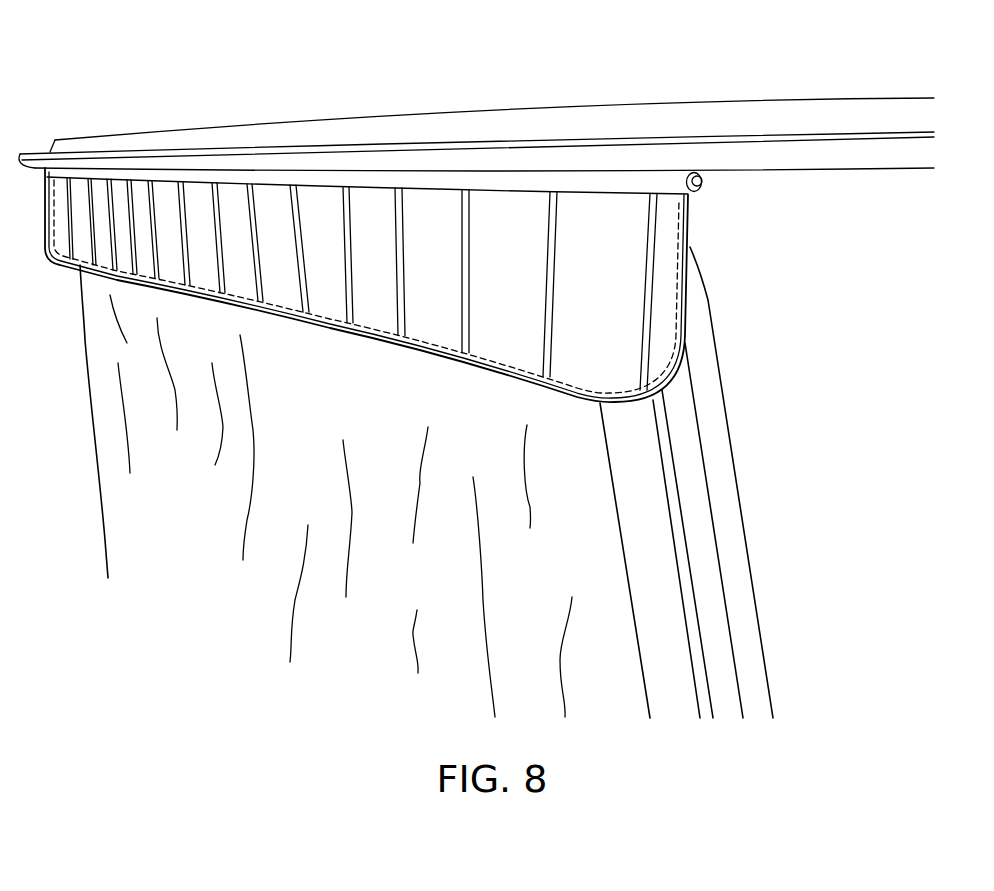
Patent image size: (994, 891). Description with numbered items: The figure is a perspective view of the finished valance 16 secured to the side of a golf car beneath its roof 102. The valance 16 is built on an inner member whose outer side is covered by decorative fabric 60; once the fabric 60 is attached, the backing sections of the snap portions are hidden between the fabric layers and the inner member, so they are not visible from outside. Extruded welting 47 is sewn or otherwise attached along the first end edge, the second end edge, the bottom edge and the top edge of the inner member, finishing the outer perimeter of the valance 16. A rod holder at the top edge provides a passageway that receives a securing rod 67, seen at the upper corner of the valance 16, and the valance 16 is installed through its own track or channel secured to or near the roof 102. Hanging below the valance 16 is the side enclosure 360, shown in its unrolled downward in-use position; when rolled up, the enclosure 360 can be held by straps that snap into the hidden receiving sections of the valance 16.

The valance 16 is at (490, 297).
The extruded welting 47 is at (45, 224).
The decorative fabric 60 is at (592, 215).
The securing rod 67 is at (702, 182).
The roof 102 is at (675, 122).
The side enclosure 360 is at (318, 407).